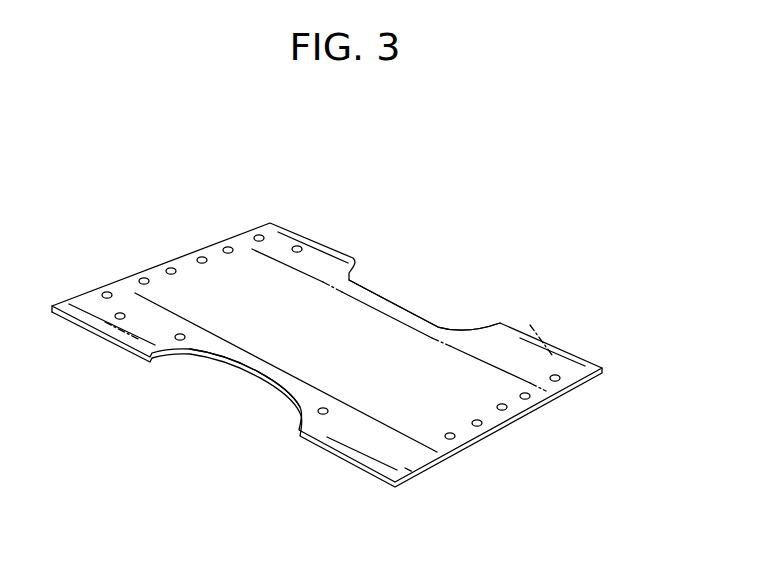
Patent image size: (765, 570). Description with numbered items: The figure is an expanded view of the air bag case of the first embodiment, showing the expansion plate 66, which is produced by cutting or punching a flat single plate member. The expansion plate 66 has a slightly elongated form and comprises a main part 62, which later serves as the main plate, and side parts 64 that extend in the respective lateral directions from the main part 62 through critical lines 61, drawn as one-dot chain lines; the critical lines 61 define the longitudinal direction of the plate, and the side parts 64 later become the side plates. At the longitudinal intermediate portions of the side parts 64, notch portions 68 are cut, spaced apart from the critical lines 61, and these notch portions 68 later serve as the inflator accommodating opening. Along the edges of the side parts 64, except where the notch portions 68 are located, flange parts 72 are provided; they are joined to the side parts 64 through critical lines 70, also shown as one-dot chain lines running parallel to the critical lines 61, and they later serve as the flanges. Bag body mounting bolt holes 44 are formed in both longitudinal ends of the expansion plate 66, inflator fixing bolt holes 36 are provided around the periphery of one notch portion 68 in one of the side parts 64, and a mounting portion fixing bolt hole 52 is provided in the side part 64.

The expansion plate 66 is at (252, 227).
The flange parts 72 is at (287, 232).
The critical lines 70 is at (313, 231).
The bag body mounting bolt holes 44 is at (171, 268).
The mounting portion fixing bolt hole 52 is at (120, 313).
The inflator fixing bolt holes 36 is at (180, 340).
The notch portions 68 is at (400, 297).
The main part 62 is at (422, 363).
The side parts 64 is at (488, 336).
The critical lines 61 is at (533, 323).